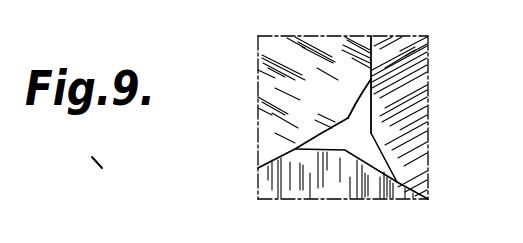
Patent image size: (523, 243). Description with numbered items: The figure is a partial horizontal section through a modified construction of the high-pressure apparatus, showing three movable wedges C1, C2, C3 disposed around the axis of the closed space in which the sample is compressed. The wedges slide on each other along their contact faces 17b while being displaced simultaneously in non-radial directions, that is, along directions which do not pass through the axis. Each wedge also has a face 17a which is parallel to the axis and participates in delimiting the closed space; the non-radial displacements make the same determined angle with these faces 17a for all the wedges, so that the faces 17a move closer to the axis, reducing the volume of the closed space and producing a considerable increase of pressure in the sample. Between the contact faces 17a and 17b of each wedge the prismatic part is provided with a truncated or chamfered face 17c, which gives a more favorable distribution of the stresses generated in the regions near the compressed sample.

The contact face 17a is at (322, 135).
The contact face 17b is at (367, 40).
The truncated or chamfered face 17c is at (336, 98).
The wedge C1 is at (270, 83).
The wedge C2 is at (333, 188).
The wedge C3 is at (410, 107).